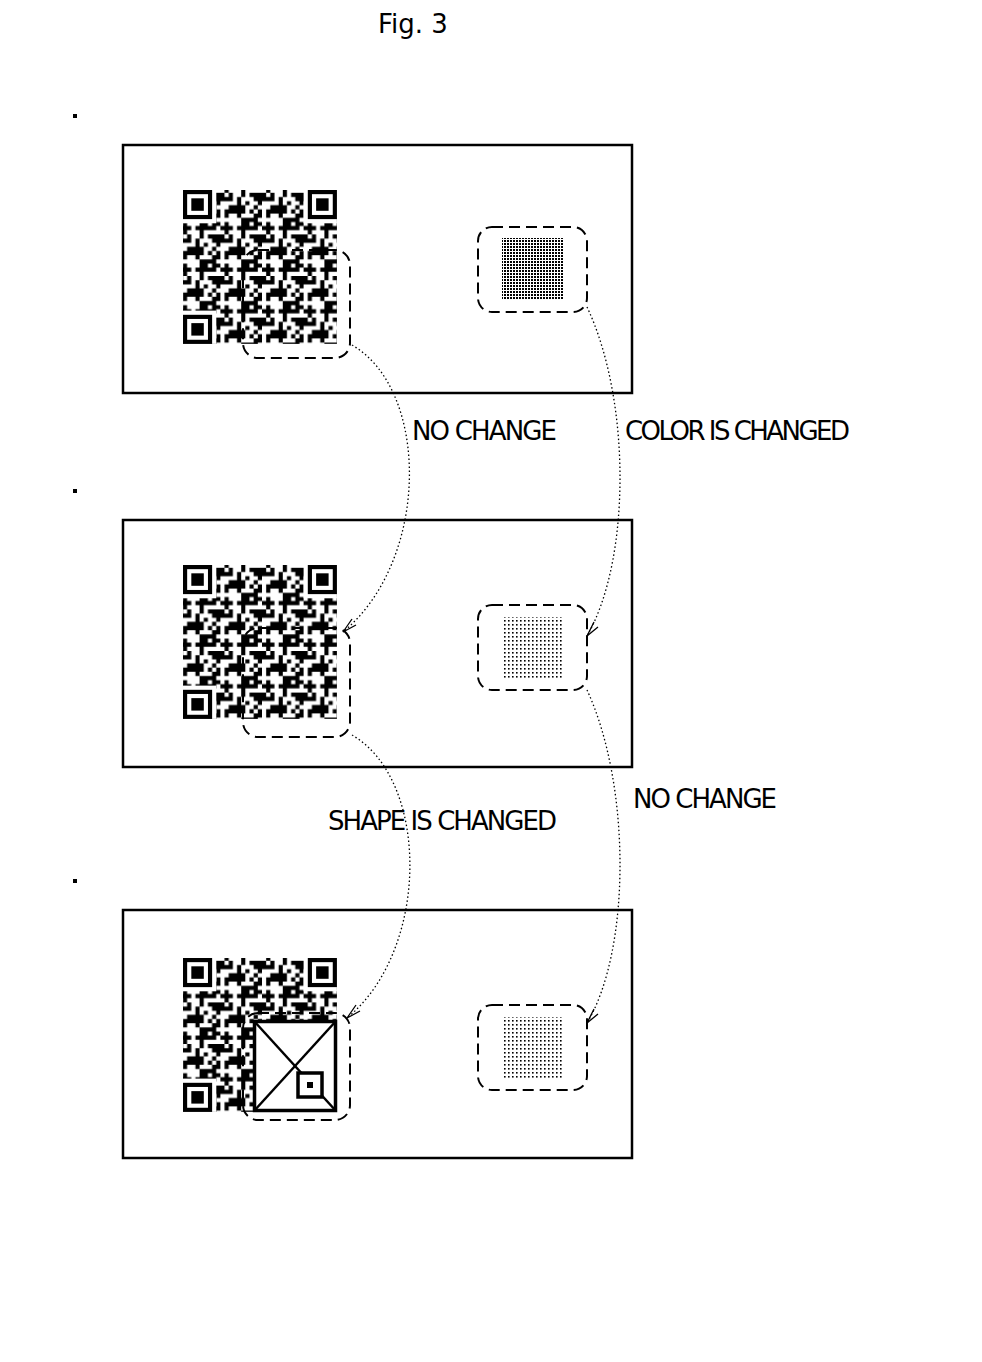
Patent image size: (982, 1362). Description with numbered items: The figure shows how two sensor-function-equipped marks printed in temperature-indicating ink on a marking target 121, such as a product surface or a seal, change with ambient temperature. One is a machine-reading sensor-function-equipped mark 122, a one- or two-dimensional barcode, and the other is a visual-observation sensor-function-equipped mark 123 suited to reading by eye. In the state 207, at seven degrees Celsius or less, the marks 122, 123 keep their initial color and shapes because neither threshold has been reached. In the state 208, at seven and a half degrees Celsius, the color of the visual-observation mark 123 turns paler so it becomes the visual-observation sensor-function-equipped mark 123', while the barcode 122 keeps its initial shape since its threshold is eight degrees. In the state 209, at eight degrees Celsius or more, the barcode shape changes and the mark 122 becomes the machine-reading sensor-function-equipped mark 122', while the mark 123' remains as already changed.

The marking target 121 is at (440, 651).
The machine-reading sensor-function-equipped mark 122 is at (266, 499).
The machine-reading sensor-function-equipped mark 122' is at (266, 1083).
The visual-observation sensor-function-equipped mark 123 is at (600, 234).
The visual-observation sensor-function-equipped mark 123' is at (604, 809).
The state at ambient temperature of 7° C. or less 207 is at (375, 188).
The state at ambient temperature of 7.5° C. 208 is at (315, 570).
The state at ambient temperature of 8° C. or more 209 is at (375, 954).